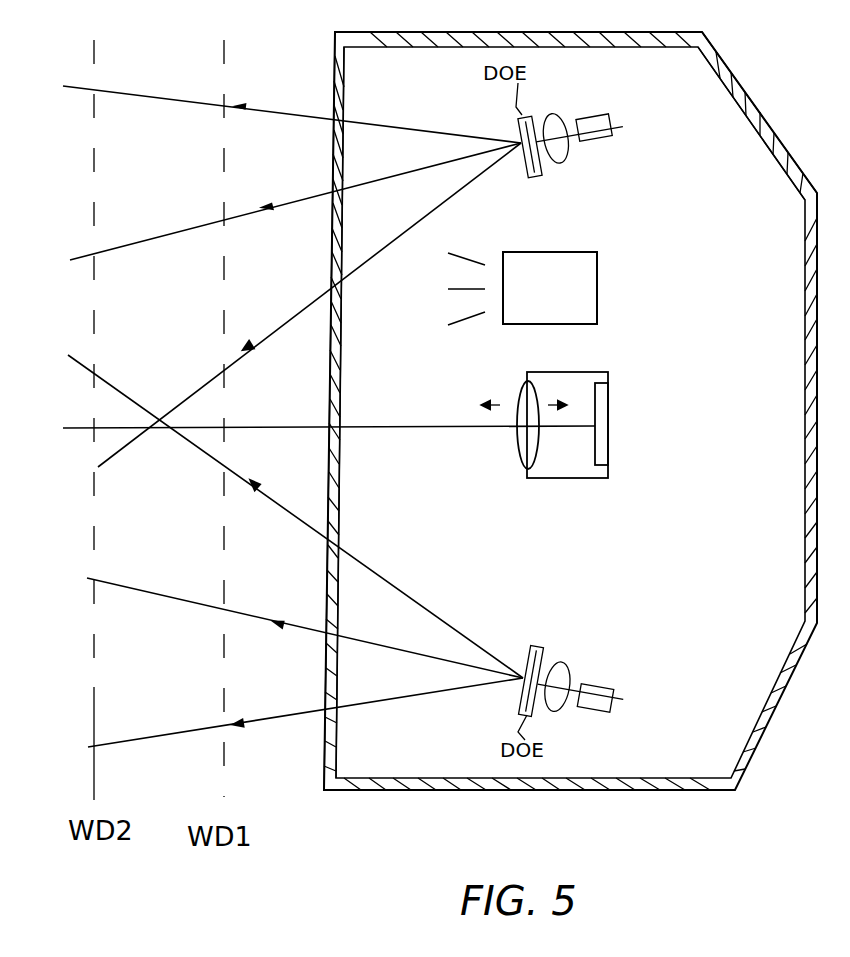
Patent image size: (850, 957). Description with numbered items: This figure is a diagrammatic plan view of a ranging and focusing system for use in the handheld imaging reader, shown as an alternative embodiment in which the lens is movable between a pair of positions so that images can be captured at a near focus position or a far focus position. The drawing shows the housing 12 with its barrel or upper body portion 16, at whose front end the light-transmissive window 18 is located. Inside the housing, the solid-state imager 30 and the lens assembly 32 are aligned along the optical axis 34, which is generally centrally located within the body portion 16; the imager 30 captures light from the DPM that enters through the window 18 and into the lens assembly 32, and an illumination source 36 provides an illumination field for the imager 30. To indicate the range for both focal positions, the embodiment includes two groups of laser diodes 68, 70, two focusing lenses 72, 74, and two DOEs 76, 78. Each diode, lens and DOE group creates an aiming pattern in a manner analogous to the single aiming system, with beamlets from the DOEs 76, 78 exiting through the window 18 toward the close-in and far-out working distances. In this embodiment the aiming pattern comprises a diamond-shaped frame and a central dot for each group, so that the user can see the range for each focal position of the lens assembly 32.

The housing 12 is at (778, 710).
The upper body portion 16 is at (757, 108).
The light-transmissive window 18 is at (342, 105).
The solid-state imager 30 is at (613, 415).
The lens assembly 32 is at (522, 398).
The optical axis 34 is at (440, 438).
The illumination source 36 is at (540, 320).
The laser diode group 68 is at (612, 700).
The laser diode group 70 is at (613, 124).
The focusing lens 72 is at (560, 668).
The focusing lens 74 is at (555, 115).
The DOE 76 is at (537, 645).
The DOE 78 is at (537, 178).